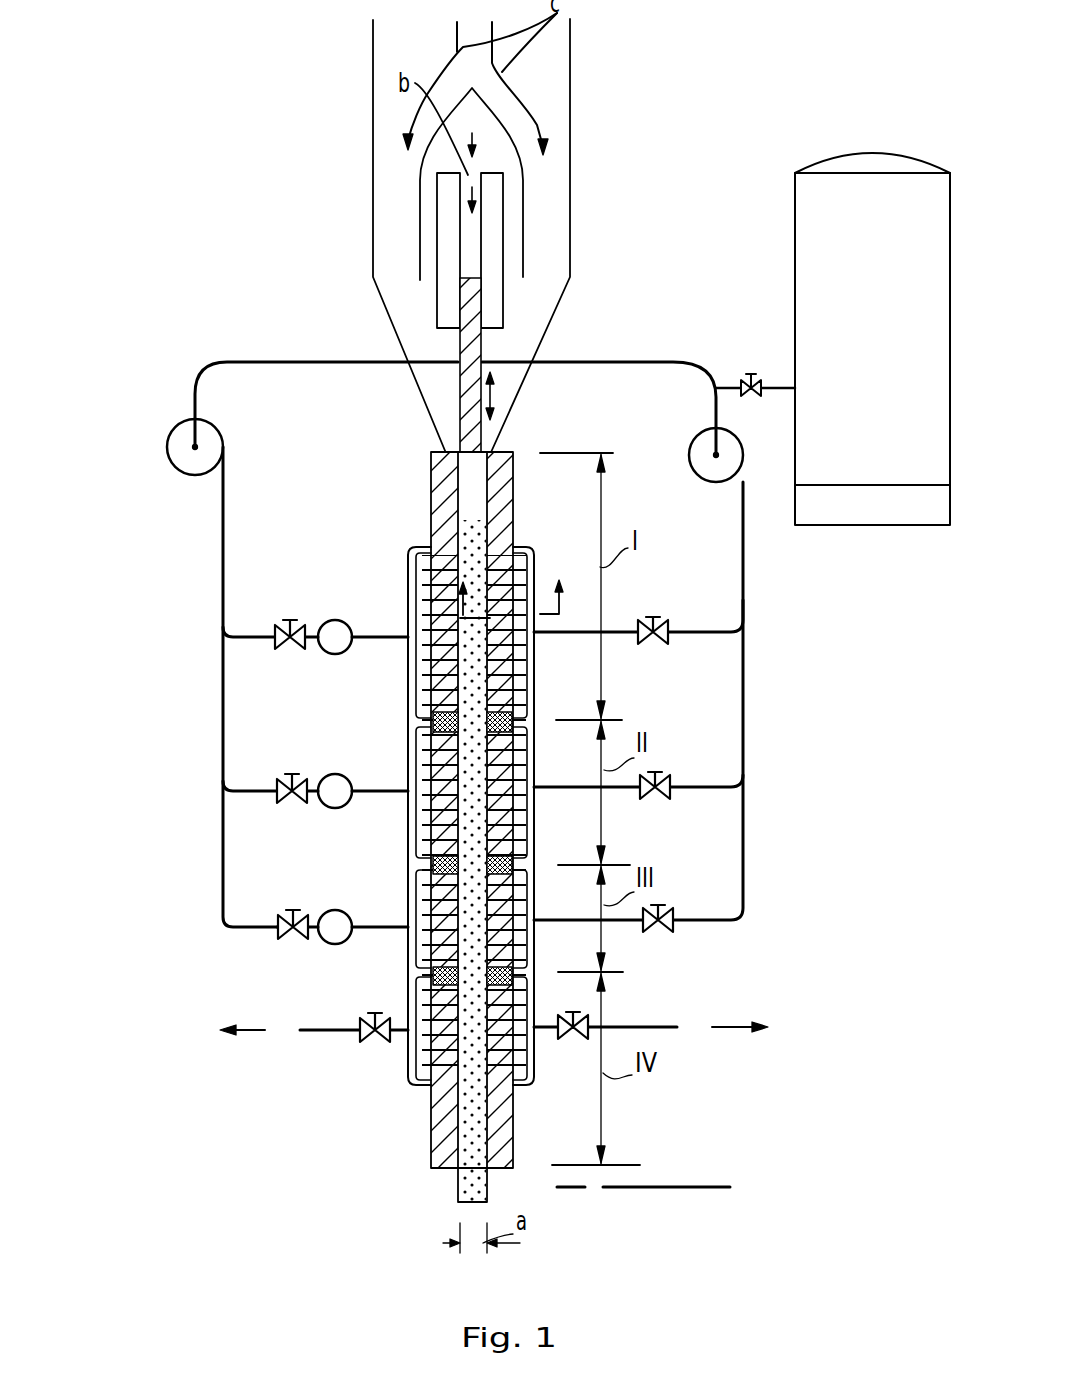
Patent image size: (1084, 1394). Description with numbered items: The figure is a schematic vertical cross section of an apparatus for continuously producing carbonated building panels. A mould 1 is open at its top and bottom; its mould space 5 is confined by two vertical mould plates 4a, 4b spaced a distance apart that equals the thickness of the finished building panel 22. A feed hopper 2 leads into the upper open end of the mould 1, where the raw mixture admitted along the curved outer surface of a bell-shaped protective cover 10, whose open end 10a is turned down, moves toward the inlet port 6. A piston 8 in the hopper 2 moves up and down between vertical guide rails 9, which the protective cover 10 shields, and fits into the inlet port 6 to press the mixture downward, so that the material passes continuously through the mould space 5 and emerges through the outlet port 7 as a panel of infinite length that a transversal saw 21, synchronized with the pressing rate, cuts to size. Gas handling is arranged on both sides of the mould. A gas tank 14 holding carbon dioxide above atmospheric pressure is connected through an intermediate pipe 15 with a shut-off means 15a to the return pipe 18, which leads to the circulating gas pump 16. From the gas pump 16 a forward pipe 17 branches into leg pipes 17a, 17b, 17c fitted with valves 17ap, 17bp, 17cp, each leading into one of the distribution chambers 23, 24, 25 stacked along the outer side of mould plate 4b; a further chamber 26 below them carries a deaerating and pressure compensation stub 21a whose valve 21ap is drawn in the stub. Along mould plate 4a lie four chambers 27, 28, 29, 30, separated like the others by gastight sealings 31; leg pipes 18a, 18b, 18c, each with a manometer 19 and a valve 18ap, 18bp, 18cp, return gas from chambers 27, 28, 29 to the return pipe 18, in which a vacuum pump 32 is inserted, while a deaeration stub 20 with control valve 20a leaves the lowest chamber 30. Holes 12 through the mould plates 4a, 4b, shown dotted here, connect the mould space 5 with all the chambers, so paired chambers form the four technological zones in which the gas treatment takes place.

The mould 1 is at (418, 1098).
The hopper 2 is at (571, 106).
The mould plate 4a is at (443, 1142).
The mould plate 4b is at (502, 1103).
The mould space 5 is at (470, 555).
The inlet port 6 is at (467, 527).
The outlet port 7 is at (467, 1187).
The piston 8 is at (453, 437).
The vertical guide rails 9 is at (446, 235).
The protective cover 10 is at (524, 203).
The open end of protective cover 10a is at (428, 282).
The holes 12 is at (412, 1082).
The gas tank 14 is at (813, 257).
The intermediate pipe 15 is at (784, 388).
The shut-off means 15a is at (751, 375).
The circulating gas pump 16 is at (700, 450).
The forward pipe 17 is at (745, 683).
The leg pipe 17a is at (730, 633).
The valve 17ap is at (653, 617).
The leg pipe 17b is at (730, 788).
The valve 17bp is at (655, 772).
The leg pipe 17c is at (730, 920).
The valve 17cp is at (658, 905).
The return pipe 18 is at (223, 707).
The leg pipe 18a is at (282, 630).
The valve 18ap is at (289, 621).
The leg pipe 18b is at (250, 793).
The valve 18bp is at (297, 801).
The leg pipe 18c is at (250, 928).
The valve 18cp is at (297, 934).
The manometer 19 is at (326, 652).
The deaeration and gas pressure compensation stub 20 is at (320, 1035).
The control valve 20a is at (365, 1043).
The transversal saw 21 is at (692, 1187).
The valve 21a is at (677, 1027).
The outlet valve 21a' 21ap is at (573, 1012).
The building panel 22 is at (472, 1118).
The distribution chamber 23 is at (522, 560).
The distribution chamber 24 is at (535, 751).
The distribution chamber 25 is at (535, 886).
The chamber 26 is at (535, 986).
The chamber 27 is at (418, 595).
The chamber 28 is at (414, 752).
The chamber 29 is at (414, 890).
The chamber 30 is at (420, 985).
The sealings 31 is at (487, 716).
The vacuum pump 32 is at (178, 447).